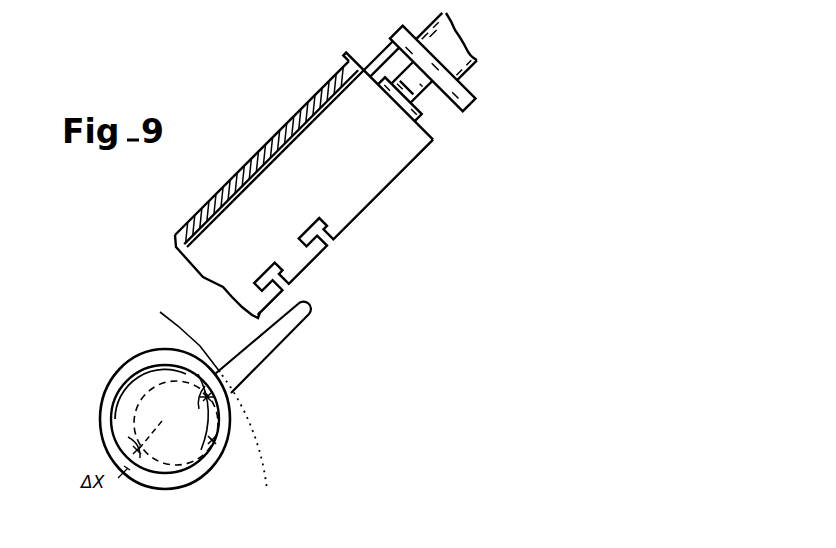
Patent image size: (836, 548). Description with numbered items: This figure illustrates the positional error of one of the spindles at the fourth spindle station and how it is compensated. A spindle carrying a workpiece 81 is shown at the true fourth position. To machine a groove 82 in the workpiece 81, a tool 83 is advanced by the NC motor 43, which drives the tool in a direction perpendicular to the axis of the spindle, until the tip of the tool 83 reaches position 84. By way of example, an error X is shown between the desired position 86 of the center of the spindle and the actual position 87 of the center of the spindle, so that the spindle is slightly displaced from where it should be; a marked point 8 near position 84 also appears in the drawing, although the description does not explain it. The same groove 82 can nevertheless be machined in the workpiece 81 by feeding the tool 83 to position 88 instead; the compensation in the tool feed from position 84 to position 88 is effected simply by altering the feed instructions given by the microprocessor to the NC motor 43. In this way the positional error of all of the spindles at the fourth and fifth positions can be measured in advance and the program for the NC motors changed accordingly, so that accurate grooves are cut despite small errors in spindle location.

The NC motor 43 is at (466, 48).
The workpiece 81 is at (106, 397).
The groove 82 is at (155, 351).
The tool 83 is at (306, 316).
The position 84 is at (212, 439).
The desired position 86 is at (165, 412).
The actual position 87 is at (162, 410).
The position 88 is at (210, 390).
The point 8 is at (222, 446).